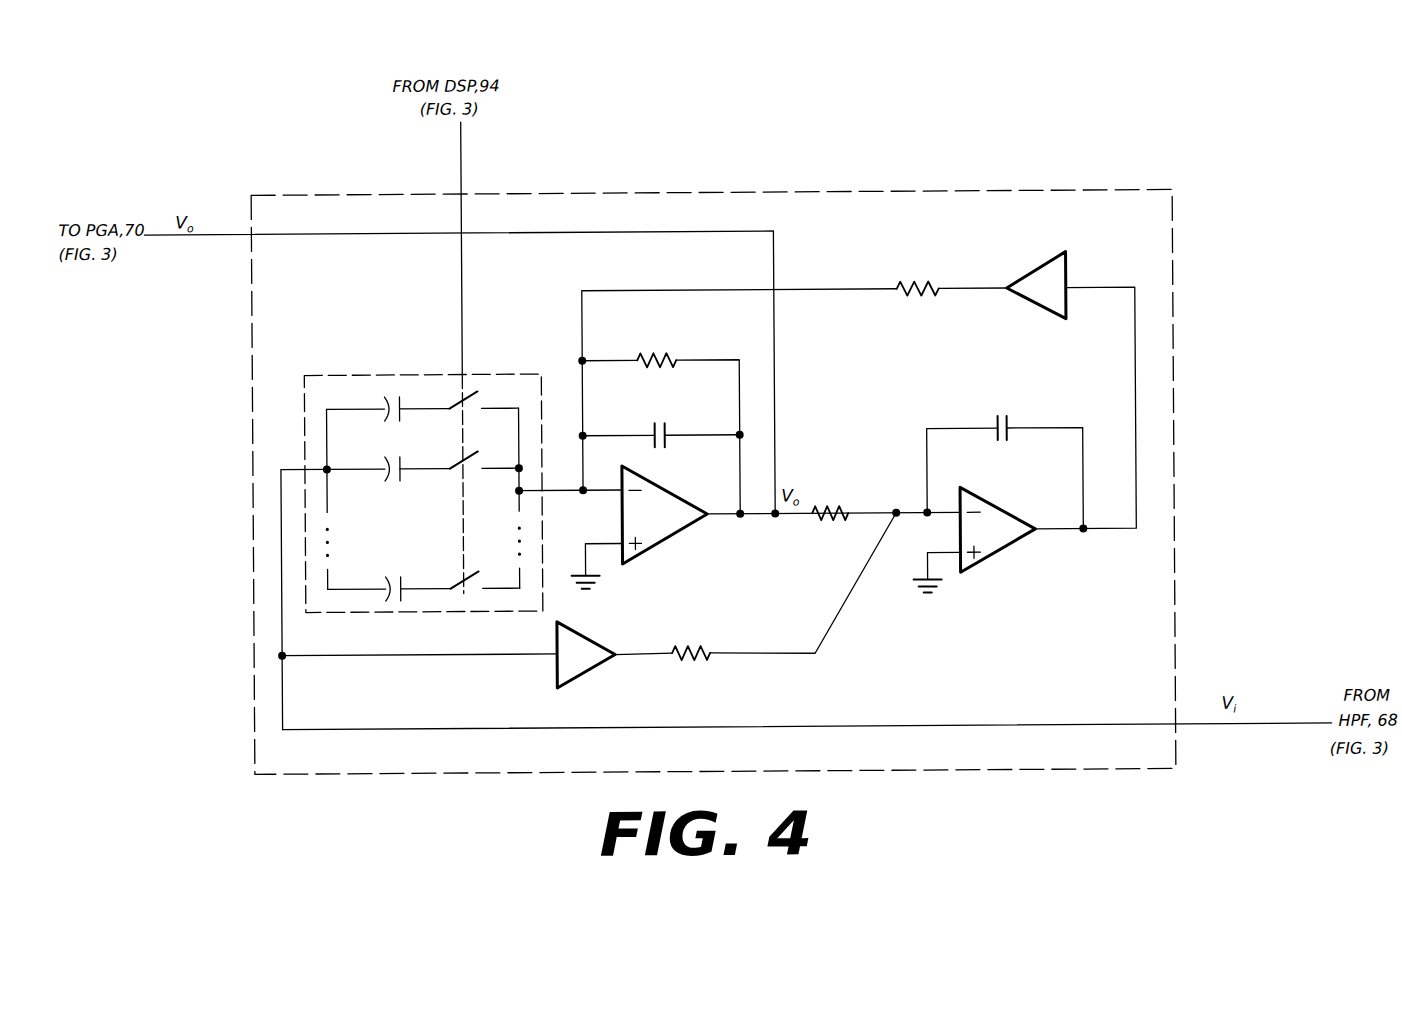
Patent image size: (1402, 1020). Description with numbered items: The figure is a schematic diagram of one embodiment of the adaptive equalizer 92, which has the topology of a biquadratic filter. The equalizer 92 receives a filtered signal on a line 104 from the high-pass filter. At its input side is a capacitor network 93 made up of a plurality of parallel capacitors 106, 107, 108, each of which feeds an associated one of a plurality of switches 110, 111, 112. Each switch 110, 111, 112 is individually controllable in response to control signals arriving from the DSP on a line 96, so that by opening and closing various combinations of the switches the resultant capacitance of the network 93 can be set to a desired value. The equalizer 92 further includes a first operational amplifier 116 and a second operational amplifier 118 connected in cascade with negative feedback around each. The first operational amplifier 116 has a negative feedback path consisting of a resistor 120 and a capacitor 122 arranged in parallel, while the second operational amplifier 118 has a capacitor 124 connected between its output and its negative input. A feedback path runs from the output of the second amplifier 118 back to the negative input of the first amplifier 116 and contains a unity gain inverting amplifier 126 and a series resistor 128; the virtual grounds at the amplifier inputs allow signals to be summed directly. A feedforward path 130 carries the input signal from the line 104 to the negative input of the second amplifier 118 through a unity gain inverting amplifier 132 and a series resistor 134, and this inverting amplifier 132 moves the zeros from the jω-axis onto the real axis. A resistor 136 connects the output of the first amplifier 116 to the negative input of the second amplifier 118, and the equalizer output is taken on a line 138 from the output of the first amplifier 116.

The adaptive equalizer 92 is at (1118, 192).
The capacitor network 93 is at (313, 374).
The line 96 is at (463, 150).
The line 104 is at (1267, 728).
The capacitor C1 106 is at (386, 397).
The capacitor C2 107 is at (385, 476).
The capacitor Cn 108 is at (386, 580).
The switch 110 is at (475, 389).
The switch 111 is at (474, 451).
The switch 112 is at (474, 571).
The first operational amplifier 116 is at (660, 538).
The second operational amplifier 118 is at (1000, 548).
The resistor R3 120 is at (651, 357).
The capacitor C1 122 is at (668, 447).
The capacitor C2 124 is at (1010, 437).
The unity gain inverting amplifier 126 is at (1038, 270).
The resistor R4 128 is at (910, 283).
The feedforward path 130 is at (396, 673).
The unity gain inverting amplifier 132 is at (556, 676).
The resistor R1 134 is at (706, 660).
The resistor R2 136 is at (822, 505).
The line 138 is at (231, 233).